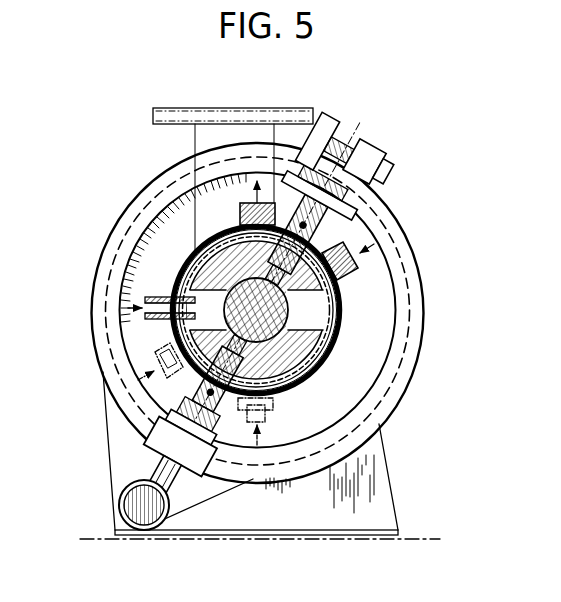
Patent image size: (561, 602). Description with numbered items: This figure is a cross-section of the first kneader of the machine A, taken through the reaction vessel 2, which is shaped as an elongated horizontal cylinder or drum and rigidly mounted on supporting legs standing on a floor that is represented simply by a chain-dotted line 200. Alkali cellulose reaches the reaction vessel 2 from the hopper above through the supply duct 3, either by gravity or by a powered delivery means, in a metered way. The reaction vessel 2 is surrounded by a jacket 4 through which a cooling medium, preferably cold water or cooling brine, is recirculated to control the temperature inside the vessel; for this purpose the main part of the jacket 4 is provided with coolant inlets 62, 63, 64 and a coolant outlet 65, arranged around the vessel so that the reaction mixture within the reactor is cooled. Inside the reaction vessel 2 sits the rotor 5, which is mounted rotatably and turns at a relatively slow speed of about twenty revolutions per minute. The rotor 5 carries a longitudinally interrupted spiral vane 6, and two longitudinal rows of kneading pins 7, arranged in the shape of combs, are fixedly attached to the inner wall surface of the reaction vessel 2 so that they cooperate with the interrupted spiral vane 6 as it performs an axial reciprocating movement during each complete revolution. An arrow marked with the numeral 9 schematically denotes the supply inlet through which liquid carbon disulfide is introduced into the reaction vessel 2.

The machine A is at (406, 221).
The reaction vessel 2 is at (334, 324).
The supply duct 3 is at (222, 128).
The jacket 4 is at (304, 372).
The rotor 5 is at (223, 310).
The interrupted spiral vane 6 is at (294, 292).
The kneading pins 7 is at (283, 274).
The supply inlet 9 is at (161, 297).
The coolant inlet 62 is at (154, 362).
The coolant inlet 63 is at (272, 428).
The coolant inlet 64 is at (344, 276).
The coolant outlet 65 is at (240, 214).
The floor 200 is at (414, 536).